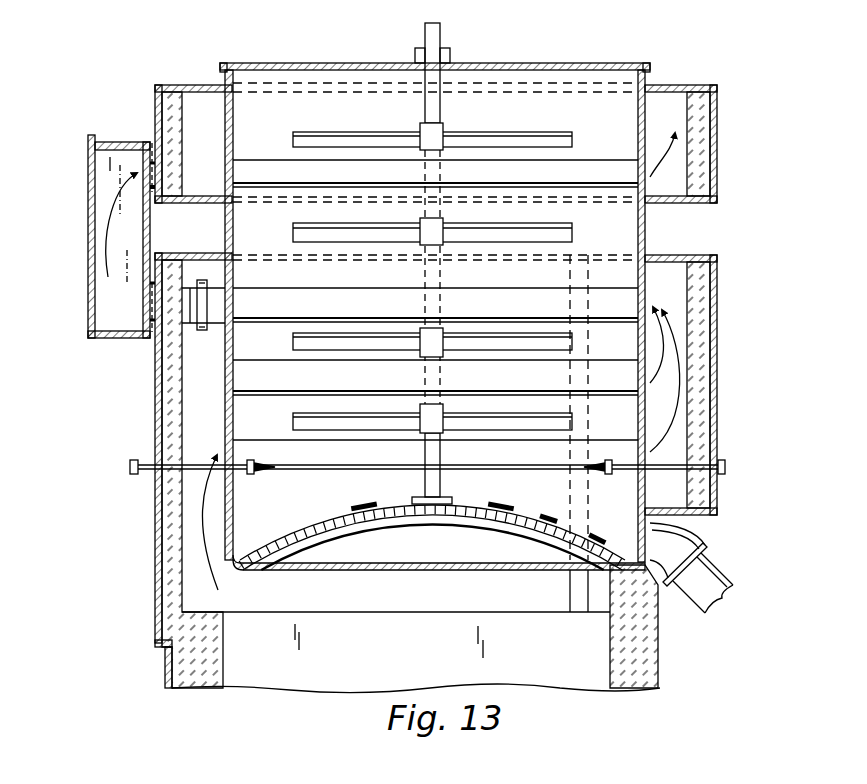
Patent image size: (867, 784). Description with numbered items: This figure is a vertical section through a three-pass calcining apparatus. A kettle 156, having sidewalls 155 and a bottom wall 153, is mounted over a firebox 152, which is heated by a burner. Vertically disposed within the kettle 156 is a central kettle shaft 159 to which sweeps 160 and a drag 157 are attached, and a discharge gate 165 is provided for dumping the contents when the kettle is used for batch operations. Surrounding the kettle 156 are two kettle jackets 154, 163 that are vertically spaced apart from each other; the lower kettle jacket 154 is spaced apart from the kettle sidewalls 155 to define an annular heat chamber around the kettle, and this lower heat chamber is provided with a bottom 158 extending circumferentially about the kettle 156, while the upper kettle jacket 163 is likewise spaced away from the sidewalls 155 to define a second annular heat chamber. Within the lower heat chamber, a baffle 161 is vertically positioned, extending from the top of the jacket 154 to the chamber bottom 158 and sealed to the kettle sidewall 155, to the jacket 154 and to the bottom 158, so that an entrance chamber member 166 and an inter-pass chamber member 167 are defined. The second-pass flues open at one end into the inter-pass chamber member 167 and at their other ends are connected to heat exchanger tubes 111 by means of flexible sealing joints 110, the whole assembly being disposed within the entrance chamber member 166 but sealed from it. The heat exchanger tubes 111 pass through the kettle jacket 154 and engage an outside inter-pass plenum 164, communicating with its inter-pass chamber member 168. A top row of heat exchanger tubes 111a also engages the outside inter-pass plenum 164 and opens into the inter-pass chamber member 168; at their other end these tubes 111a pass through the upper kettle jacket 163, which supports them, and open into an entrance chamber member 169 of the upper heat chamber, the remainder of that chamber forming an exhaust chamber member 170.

The flexible sealing joint 110 is at (195, 318).
The heat exchanger tube 111 is at (152, 335).
The top row of heat exchanger tubes 111a is at (153, 168).
The firebox 152 is at (640, 653).
The bottom wall 153 is at (350, 548).
The kettle jacket 154 is at (157, 430).
The sidewall 155 is at (647, 213).
The kettle 156 is at (620, 238).
The drag 157 is at (235, 513).
The bottom 158 is at (225, 612).
The central kettle shaft 159 is at (440, 100).
The sweep 160 is at (357, 133).
The baffle 161 is at (580, 592).
The kettle jacket 163 is at (157, 98).
The outside inter-pass plenum 164 is at (90, 268).
The discharge gate 165 is at (710, 570).
The entrance chamber member 166 is at (198, 390).
The inter-pass chamber member 167 is at (673, 287).
The inter-pass chamber member 168 is at (110, 163).
The entrance chamber member 169 is at (203, 112).
The exhaust chamber member 170 is at (690, 112).